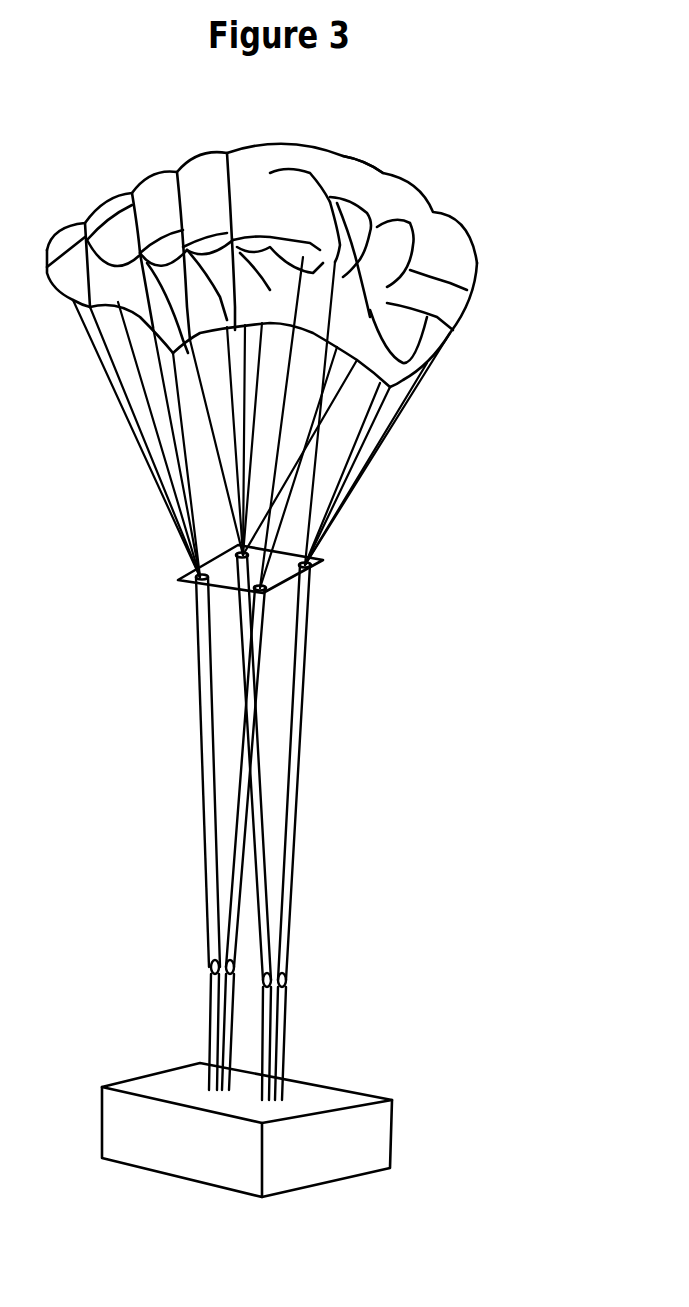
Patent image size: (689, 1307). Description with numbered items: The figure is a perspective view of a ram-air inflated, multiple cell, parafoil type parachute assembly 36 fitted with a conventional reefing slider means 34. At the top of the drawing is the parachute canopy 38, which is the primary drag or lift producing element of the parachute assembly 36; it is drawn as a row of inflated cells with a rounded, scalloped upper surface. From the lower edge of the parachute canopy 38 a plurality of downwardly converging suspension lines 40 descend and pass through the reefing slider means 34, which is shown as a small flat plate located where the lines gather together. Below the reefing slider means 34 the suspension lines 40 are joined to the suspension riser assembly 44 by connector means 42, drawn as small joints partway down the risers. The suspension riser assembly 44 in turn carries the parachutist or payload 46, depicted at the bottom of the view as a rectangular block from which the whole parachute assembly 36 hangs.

The reefing slider means 34 is at (323, 530).
The parachute assembly 36 is at (368, 125).
The parachute canopy 38 is at (382, 173).
The suspension lines 40 is at (307, 650).
The connector means 42 is at (290, 973).
The suspension riser assembly 44 is at (285, 1027).
The payload 46 is at (307, 1097).